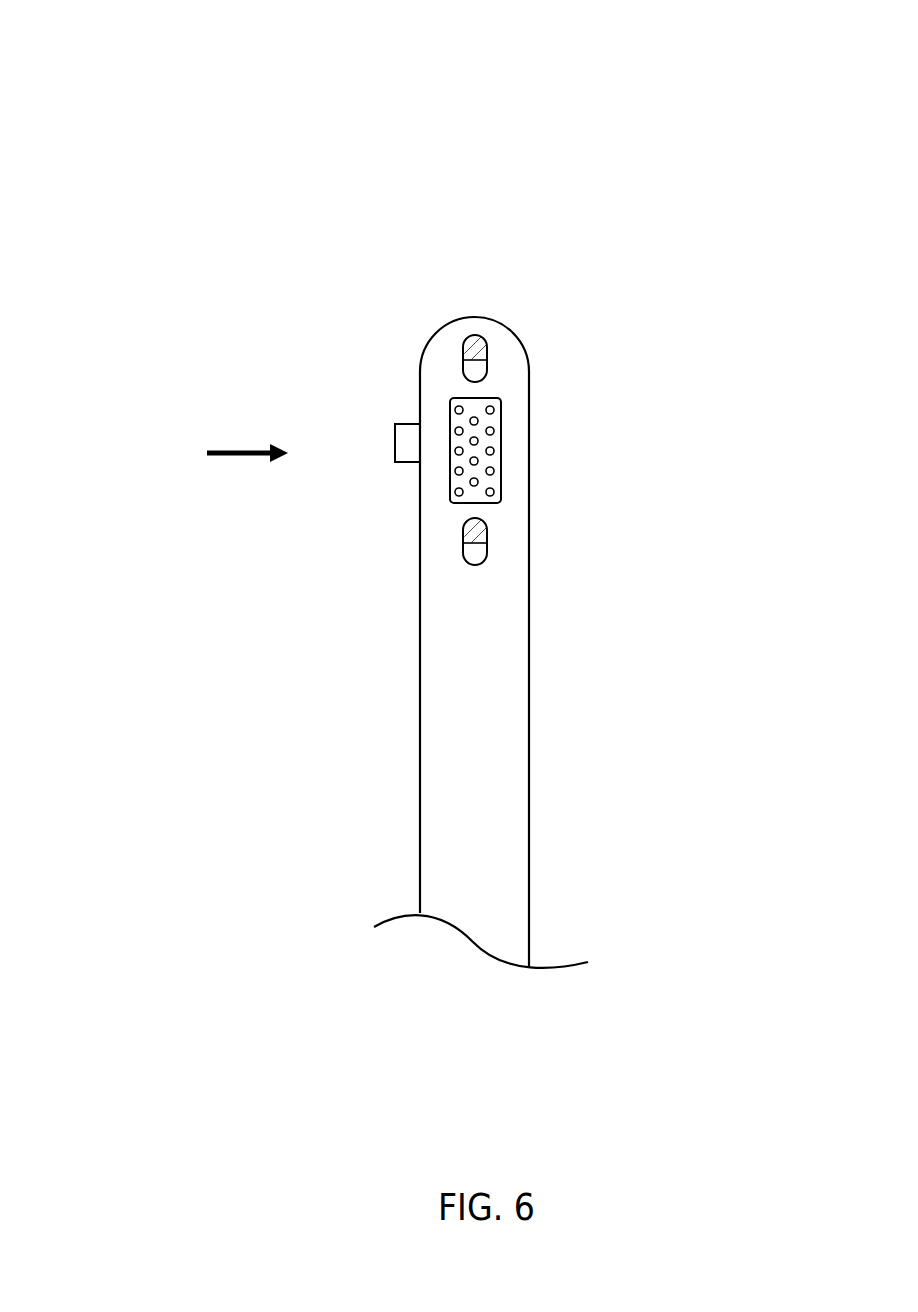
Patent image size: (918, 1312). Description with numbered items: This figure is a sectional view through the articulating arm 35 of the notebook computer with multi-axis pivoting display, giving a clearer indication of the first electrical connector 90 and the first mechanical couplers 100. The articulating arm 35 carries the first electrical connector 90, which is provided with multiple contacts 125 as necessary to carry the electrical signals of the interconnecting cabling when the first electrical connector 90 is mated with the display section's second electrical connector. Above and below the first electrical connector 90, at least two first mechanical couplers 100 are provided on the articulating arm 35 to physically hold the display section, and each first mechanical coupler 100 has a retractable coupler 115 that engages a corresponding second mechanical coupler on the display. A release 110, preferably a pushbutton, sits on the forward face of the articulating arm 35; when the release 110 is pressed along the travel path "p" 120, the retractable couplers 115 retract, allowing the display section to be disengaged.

The first mechanical coupler 100 is at (460, 484).
The articulating arm 35 is at (493, 777).
The retractable coupler 115 is at (462, 348).
The contact 125 is at (486, 469).
The first electrical connector 90 is at (495, 452).
The release 110 is at (397, 463).
The travel path "p" 120 is at (233, 455).